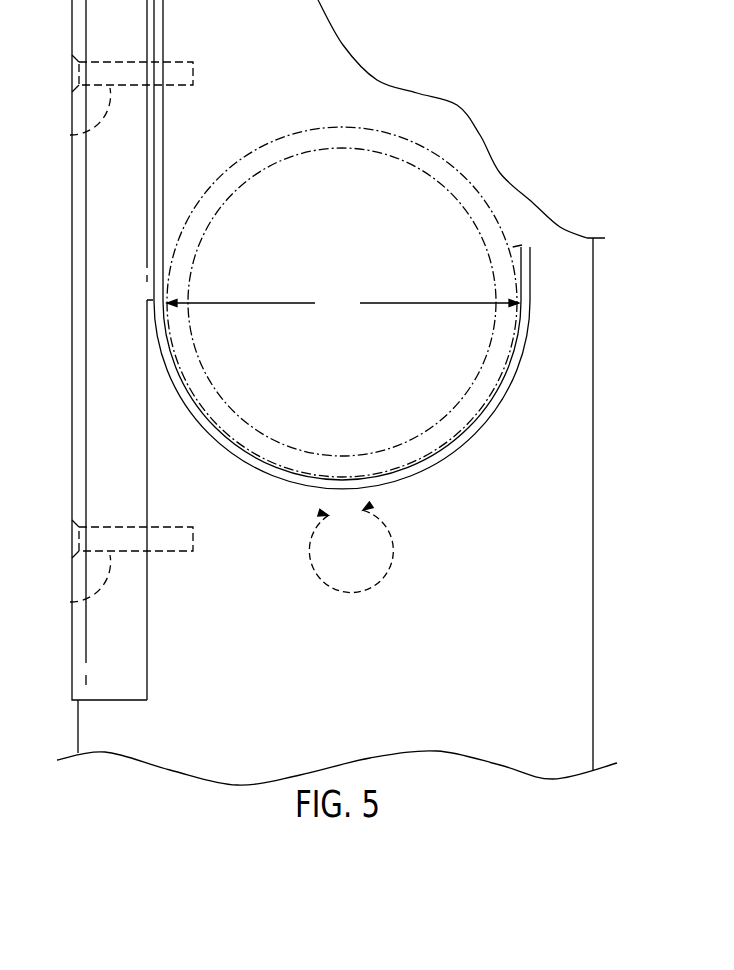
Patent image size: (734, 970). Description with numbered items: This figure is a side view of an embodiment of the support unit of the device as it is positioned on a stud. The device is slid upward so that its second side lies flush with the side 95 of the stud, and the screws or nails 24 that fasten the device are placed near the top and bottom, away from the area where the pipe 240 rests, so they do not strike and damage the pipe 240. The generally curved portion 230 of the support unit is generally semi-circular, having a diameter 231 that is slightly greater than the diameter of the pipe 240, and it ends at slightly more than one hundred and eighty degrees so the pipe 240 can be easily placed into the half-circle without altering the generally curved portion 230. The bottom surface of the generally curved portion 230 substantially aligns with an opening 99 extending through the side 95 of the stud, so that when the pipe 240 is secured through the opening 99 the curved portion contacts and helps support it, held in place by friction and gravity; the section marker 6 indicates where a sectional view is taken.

The side of the stud 95 is at (279, 18).
The screws or nails 24 is at (72, 138).
The generally curved portion 230 is at (417, 468).
The opening 99 is at (341, 190).
The pipe 240 is at (428, 166).
The diameter 231 is at (343, 304).
The section line 6 is at (351, 547).